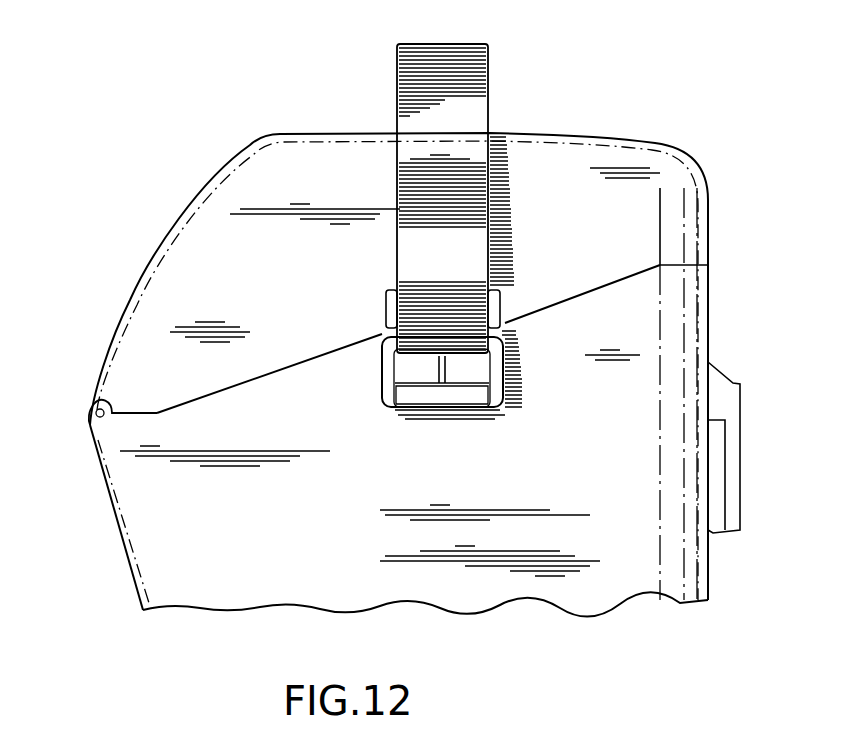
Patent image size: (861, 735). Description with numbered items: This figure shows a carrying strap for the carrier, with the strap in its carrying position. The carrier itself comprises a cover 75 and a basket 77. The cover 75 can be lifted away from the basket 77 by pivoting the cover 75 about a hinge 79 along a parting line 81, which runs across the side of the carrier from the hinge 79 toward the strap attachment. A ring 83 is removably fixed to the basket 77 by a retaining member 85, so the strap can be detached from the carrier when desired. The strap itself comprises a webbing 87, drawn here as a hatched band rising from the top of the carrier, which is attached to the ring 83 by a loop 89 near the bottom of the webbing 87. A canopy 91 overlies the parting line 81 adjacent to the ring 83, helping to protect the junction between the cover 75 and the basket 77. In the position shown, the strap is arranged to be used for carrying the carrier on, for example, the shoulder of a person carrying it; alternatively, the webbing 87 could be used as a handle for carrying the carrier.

The cover 75 is at (238, 290).
The basket 77 is at (250, 562).
The hinge 79 is at (90, 426).
The parting line 81 is at (178, 400).
The ring 83 is at (385, 372).
The retaining member 85 is at (452, 395).
The webbing 87 is at (442, 217).
The loop 89 is at (452, 352).
The canopy 91 is at (388, 318).